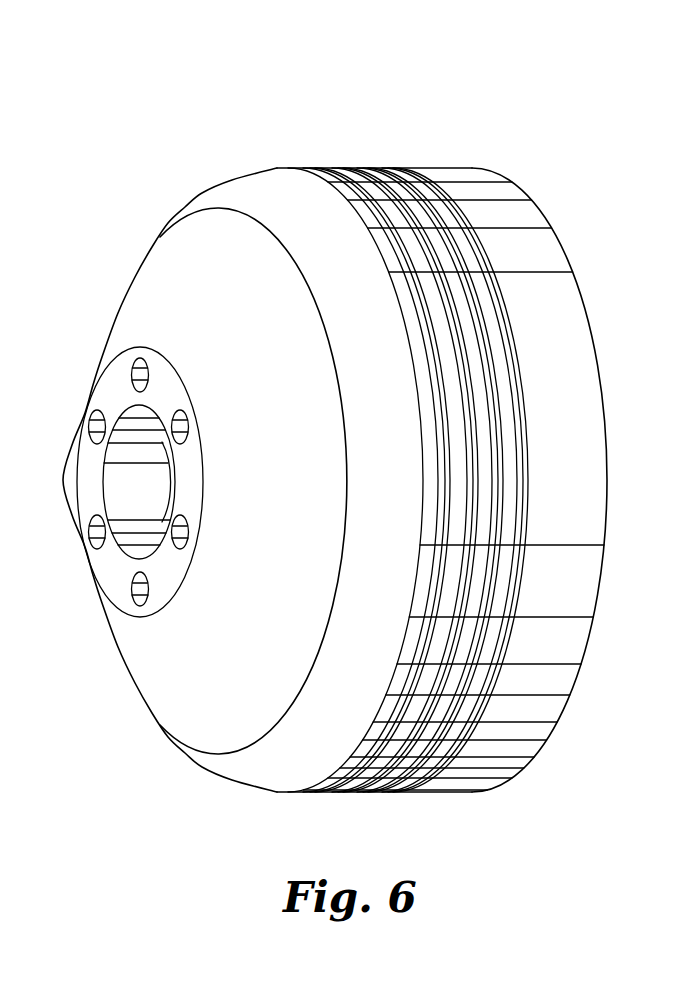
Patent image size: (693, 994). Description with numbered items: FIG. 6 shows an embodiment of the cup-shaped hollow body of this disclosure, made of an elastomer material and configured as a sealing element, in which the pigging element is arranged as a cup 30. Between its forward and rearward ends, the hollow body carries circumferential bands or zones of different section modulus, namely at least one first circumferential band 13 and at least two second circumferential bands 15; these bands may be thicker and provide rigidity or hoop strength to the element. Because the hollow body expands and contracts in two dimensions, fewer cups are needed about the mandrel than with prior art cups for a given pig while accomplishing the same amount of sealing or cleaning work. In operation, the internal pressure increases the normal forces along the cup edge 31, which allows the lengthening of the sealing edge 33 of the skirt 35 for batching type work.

The cup 30 is at (229, 152).
The cup edge 31 is at (305, 168).
The second circumferential bands 15 is at (420, 223).
The first circumferential band 13 is at (490, 283).
The skirt 35 is at (543, 257).
The sealing edge 33 is at (597, 352).